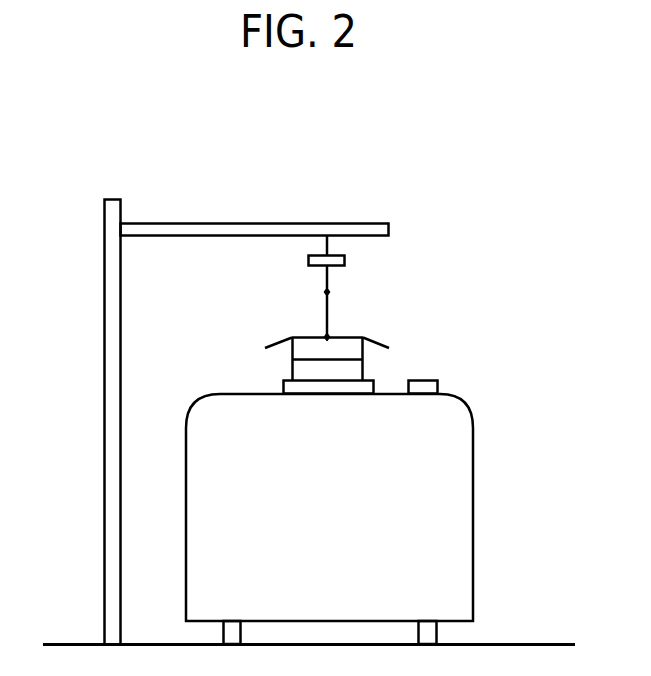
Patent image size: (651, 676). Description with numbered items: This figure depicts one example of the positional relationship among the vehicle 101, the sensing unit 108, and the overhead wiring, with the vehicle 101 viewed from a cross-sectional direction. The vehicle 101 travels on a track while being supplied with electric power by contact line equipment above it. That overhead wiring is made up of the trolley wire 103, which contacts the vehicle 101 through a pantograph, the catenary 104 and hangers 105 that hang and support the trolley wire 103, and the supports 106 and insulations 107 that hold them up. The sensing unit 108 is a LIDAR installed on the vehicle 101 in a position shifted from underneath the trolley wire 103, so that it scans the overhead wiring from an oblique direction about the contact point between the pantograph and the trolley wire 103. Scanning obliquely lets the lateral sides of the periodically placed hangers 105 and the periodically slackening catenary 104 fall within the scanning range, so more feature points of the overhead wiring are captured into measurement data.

The vehicle 101 is at (499, 414).
The trolley wire 103 is at (325, 337).
The catenary 104 is at (325, 292).
The hangers 105 is at (330, 314).
The supports 106 is at (415, 211).
The insulations 107 is at (345, 261).
The sensing unit 108 is at (418, 380).